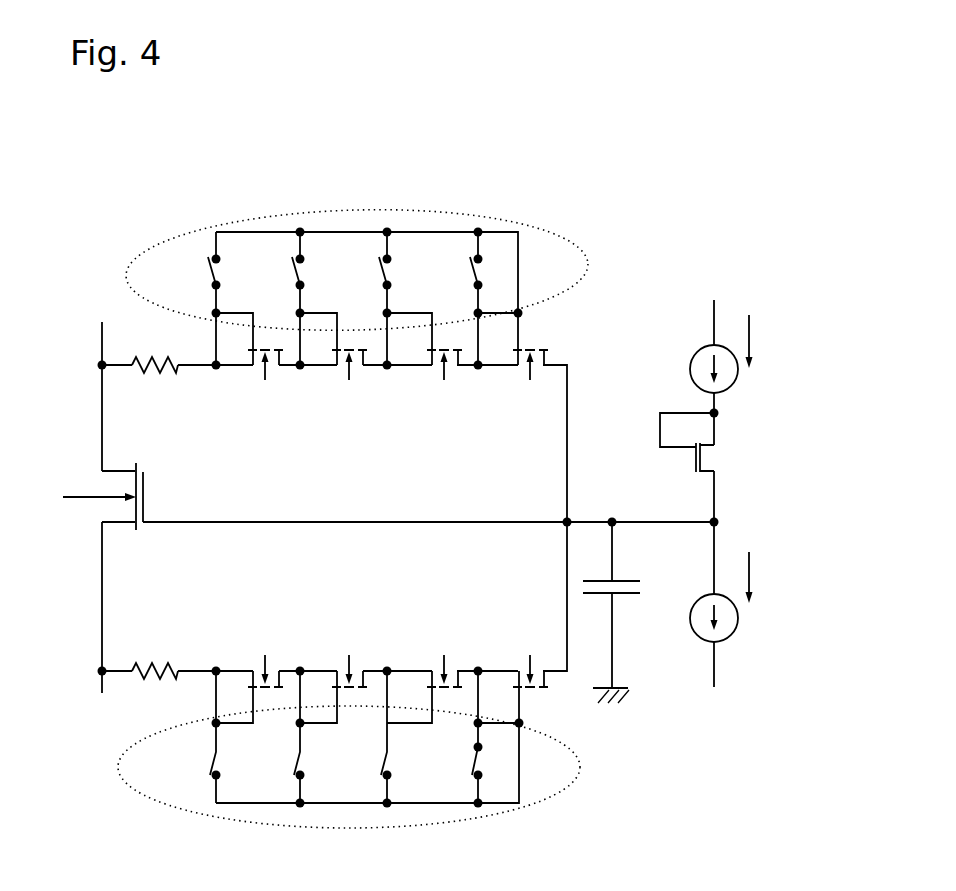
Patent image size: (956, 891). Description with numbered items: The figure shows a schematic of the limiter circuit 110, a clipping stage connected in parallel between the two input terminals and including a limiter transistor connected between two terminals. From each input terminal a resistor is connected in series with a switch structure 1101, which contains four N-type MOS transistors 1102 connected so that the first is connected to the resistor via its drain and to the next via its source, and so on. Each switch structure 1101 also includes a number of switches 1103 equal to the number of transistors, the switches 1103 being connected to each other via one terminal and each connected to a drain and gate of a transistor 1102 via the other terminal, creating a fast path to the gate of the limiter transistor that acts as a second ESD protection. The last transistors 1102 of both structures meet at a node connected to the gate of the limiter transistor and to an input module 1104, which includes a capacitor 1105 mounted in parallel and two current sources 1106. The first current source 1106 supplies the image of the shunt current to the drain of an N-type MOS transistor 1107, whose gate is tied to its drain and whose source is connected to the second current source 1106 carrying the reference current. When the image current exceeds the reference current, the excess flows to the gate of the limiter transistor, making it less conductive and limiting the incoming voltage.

The limiter circuit 110 is at (612, 148).
The switch structure 1101 is at (554, 236).
The N-type MOS transistor 1102 is at (376, 377).
The switch 1103 is at (196, 276).
The input module 1104 is at (765, 431).
The capacitor 1105 is at (620, 606).
The current source 1106 is at (696, 352).
The N-type MOS transistor 1107 is at (710, 458).